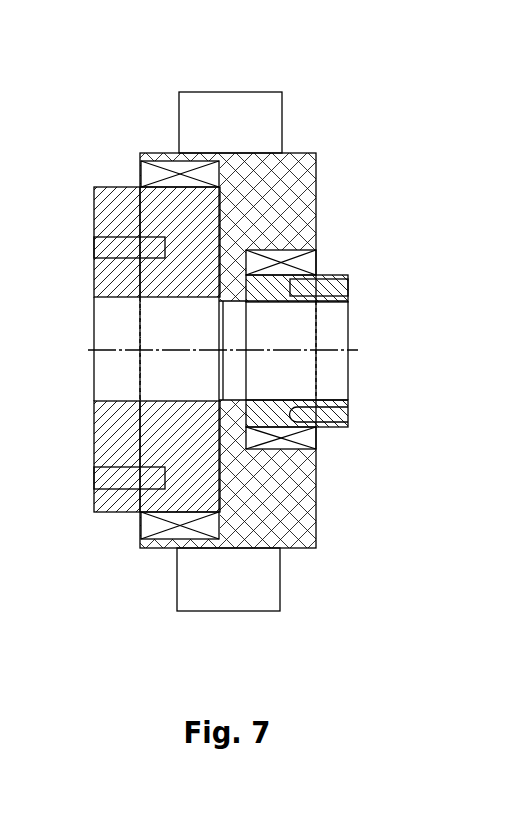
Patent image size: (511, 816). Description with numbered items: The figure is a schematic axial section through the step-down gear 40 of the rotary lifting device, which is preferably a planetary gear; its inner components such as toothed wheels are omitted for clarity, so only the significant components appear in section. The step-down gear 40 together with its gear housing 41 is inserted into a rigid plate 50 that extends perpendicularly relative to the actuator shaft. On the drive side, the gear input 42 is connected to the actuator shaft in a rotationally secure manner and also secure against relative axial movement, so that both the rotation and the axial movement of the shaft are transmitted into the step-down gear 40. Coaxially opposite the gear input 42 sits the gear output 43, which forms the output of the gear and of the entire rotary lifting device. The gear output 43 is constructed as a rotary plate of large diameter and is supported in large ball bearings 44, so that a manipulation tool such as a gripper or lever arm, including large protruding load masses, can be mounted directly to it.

The step-down gear 40 is at (353, 457).
The gear housing 41 is at (316, 196).
The gear input 42 is at (348, 294).
The gear output 43 is at (108, 436).
The ball bearings 44 is at (145, 163).
The rigid plate 50 is at (227, 108).